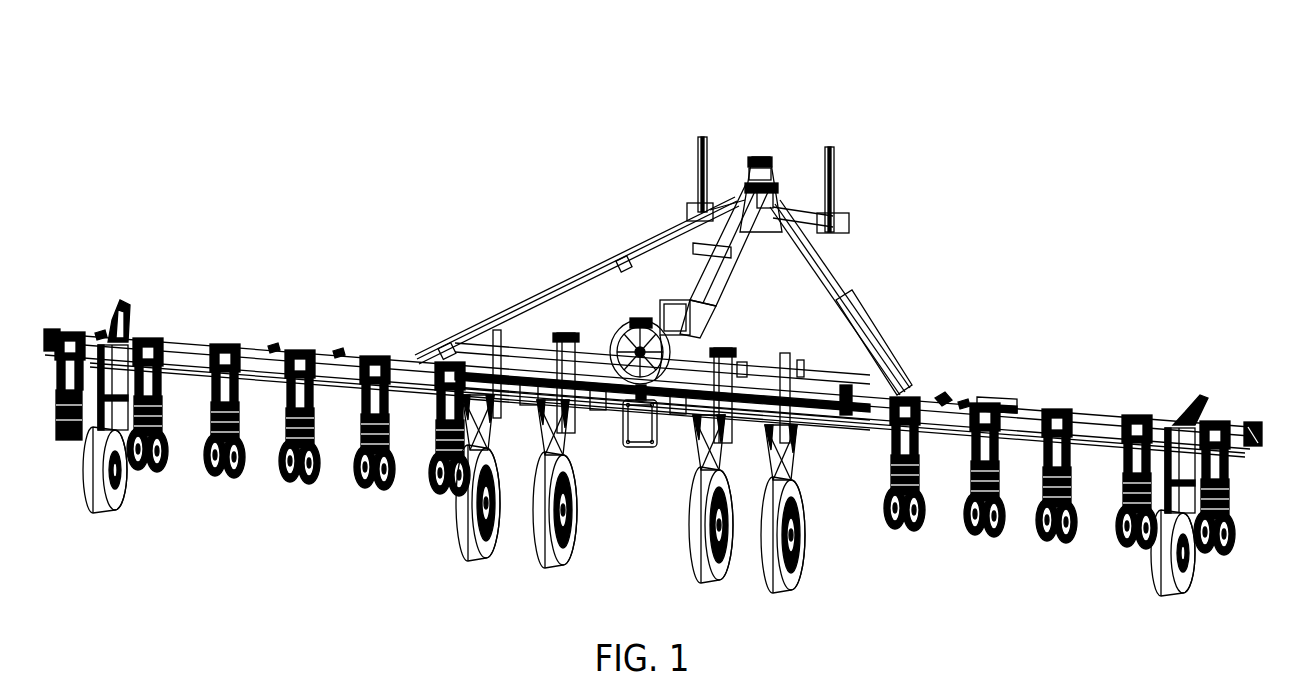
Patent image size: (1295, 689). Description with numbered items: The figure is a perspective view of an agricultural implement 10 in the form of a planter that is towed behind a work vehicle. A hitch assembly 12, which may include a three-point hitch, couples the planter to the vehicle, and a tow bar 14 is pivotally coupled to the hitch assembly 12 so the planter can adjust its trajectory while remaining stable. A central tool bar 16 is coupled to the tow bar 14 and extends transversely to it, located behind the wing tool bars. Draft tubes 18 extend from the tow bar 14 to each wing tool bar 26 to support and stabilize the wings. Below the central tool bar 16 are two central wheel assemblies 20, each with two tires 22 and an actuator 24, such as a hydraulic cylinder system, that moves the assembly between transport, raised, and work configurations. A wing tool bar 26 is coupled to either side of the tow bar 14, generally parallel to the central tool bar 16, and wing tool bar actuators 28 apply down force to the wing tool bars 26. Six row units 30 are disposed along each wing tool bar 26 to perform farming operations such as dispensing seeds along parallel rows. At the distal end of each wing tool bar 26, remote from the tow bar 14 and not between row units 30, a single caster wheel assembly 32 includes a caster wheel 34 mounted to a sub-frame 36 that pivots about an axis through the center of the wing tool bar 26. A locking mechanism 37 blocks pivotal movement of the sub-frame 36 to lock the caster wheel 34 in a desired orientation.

The agricultural implement 10 is at (950, 66).
The hitch assembly 12 is at (766, 157).
The tow bar 14 is at (743, 233).
The central tool bar 16 is at (770, 390).
The draft tubes 18 is at (642, 248).
The central wheel assemblies 20 is at (693, 452).
The tires 22 is at (547, 563).
The actuator 24 is at (563, 367).
The wing tool bar 26 is at (270, 362).
The wing tool bar actuators 28 is at (1000, 396).
The row units 30 is at (230, 357).
The caster wheel assembly 32 is at (140, 484).
The caster wheel 34 is at (102, 513).
The sub-frame 36 is at (133, 338).
The locking mechanism 37 is at (543, 360).